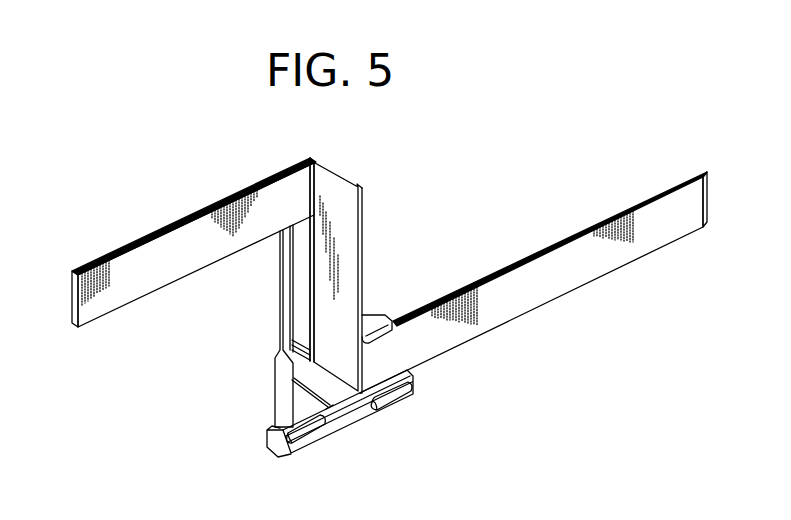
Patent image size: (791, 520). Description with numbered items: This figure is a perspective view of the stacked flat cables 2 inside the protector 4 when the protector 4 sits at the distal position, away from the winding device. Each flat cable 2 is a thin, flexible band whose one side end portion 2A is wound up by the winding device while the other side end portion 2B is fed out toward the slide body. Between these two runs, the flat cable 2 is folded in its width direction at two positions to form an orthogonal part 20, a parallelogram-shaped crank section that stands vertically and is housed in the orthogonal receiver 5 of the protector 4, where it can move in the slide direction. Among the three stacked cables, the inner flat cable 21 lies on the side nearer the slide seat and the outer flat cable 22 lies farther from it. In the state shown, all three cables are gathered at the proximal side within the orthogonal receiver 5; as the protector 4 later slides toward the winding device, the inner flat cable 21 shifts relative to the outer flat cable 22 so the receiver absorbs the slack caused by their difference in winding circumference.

The flat cable 2 is at (648, 193).
The one side end portion 2A is at (686, 178).
The other side end portion 2B is at (86, 272).
The protector 4 is at (336, 254).
The orthogonal receiver 5 is at (363, 223).
The orthogonal part 20 is at (342, 255).
The inner flat cable 21 is at (308, 261).
The outer flat cable 22 is at (273, 262).